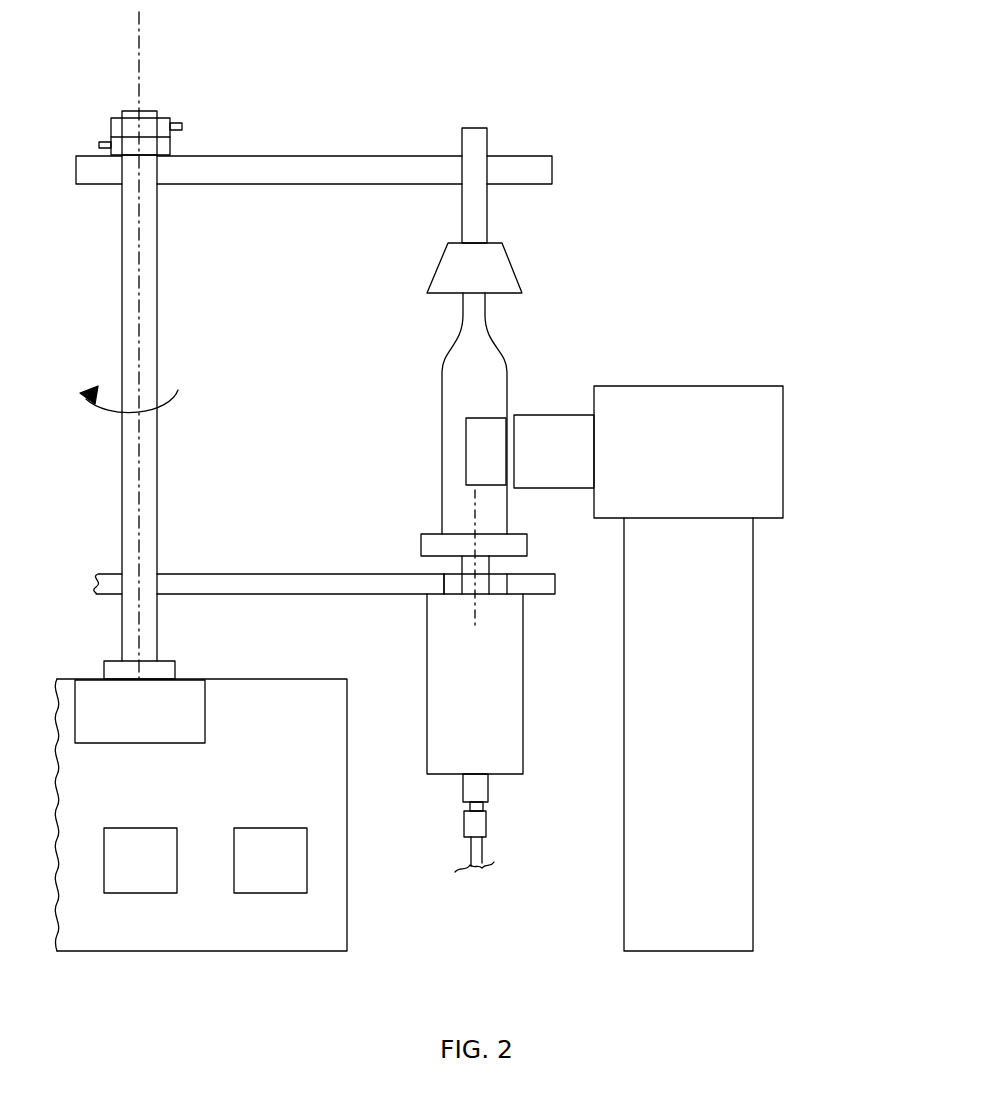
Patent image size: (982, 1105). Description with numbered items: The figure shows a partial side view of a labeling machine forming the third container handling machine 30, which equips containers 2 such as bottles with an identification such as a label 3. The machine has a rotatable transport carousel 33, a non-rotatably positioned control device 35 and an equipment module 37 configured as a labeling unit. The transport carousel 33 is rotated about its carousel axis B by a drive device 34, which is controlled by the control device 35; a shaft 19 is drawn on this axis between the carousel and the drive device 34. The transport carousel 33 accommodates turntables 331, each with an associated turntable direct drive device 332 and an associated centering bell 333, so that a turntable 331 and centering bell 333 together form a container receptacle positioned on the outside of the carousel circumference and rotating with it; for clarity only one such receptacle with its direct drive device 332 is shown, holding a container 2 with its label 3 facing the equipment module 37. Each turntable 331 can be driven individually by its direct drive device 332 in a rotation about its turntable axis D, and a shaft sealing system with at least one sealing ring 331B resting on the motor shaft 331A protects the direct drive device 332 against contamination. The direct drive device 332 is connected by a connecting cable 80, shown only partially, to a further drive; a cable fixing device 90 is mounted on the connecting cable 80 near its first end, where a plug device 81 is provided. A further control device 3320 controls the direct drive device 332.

The third container handling machine 30 is at (680, 112).
The carousel axis B is at (140, 92).
The rotary shaft 19 is at (157, 251).
The transport carousel 33 is at (373, 157).
The centering bell 333 is at (502, 245).
The container 2 is at (497, 343).
The label 3 is at (484, 418).
The equipment module 37 is at (748, 355).
The turntable axis D is at (473, 515).
The turntable 331 is at (527, 546).
The motor shaft 331A is at (483, 567).
The sealing ring 331B is at (448, 575).
The turntable direct drive device 332 is at (523, 631).
The plug device 81 is at (488, 783).
The cable fixing device 90 is at (486, 820).
The connecting cable 80 is at (482, 857).
The drive device 34 is at (190, 678).
The control device 3320 is at (143, 893).
The control device 35 is at (273, 893).